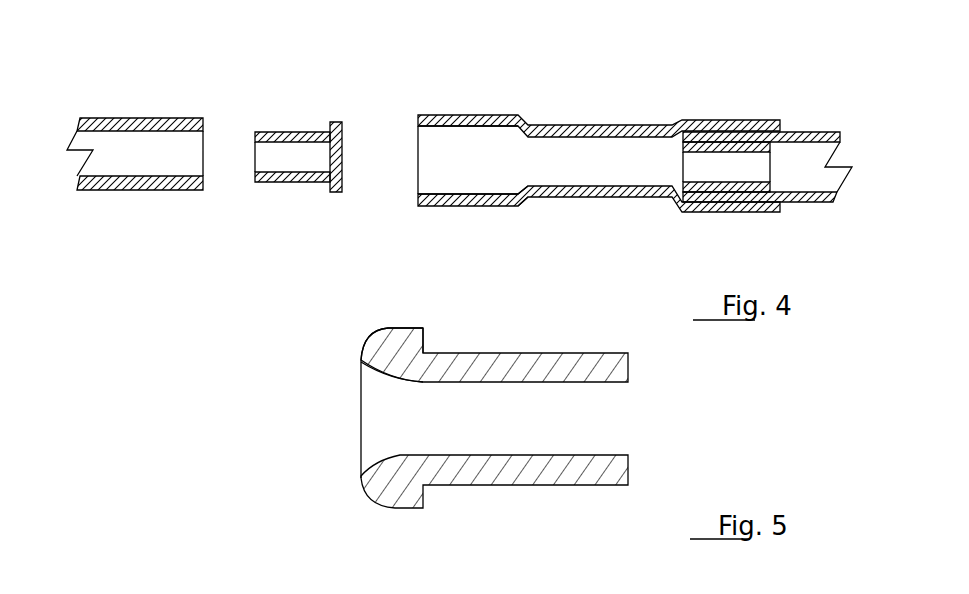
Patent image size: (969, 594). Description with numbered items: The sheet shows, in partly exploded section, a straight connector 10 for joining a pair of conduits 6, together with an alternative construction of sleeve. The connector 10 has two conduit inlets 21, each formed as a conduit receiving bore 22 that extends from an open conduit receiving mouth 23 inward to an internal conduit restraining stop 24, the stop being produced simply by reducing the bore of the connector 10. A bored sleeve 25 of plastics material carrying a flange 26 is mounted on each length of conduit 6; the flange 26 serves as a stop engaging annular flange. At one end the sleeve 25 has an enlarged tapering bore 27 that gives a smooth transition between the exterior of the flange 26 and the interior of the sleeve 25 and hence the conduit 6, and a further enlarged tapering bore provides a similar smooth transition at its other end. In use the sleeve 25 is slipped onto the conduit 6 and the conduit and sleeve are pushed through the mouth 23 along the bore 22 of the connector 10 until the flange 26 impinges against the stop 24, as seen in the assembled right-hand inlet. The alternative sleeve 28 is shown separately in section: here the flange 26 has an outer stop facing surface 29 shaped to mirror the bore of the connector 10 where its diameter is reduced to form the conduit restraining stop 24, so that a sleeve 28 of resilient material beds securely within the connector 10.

In FIG. 4, the conduit 6 is at (133, 118).
In FIG. 4, the straight connector 10 is at (578, 126).
In FIG. 4, the conduit inlet 21 is at (400, 192).
In FIG. 4, the conduit receiving bore 22 is at (470, 165).
In FIG. 4, the open conduit receiving mouth 23 is at (415, 167).
In FIG. 4, the internal conduit restraining stop 24 is at (517, 207).
In FIG. 4, the bored sleeve 25 is at (272, 132).
In FIG. 4, the flange 26 is at (342, 122).
In FIG. 5, the flange 26 is at (422, 350).
In FIG. 5, the enlarged tapering bore 27 is at (362, 372).
In FIG. 5, the sleeve 28 is at (507, 362).
In FIG. 5, the outer stop facing surface 29 is at (380, 330).